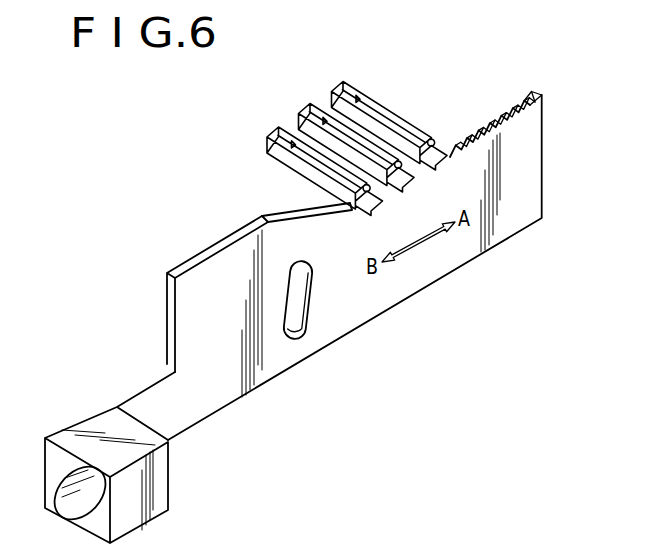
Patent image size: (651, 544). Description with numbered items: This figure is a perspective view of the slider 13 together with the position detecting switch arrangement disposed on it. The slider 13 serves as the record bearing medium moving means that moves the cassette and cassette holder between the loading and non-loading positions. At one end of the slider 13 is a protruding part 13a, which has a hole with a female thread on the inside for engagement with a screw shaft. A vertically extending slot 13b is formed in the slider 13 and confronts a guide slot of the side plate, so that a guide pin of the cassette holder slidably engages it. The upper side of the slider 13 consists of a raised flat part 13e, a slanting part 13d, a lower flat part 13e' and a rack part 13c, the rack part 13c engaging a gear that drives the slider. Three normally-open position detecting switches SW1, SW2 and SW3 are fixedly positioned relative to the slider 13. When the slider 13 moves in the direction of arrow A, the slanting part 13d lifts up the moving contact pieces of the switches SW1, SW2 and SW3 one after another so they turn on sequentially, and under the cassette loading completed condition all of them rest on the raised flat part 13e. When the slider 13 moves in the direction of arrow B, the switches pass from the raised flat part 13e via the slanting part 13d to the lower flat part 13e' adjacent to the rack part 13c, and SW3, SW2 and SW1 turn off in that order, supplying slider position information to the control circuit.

The slider 13 is at (537, 137).
The protruding part 13a is at (163, 473).
The vertically extending slot 13b is at (300, 315).
The rack part 13c is at (507, 110).
The slanting part 13d is at (293, 210).
The raised flat part 13e is at (217, 288).
The lower flat part 13e' is at (337, 234).
The position detecting switch SW1 is at (267, 132).
The position detecting switch SW2 is at (298, 113).
The position detecting switch SW3 is at (331, 91).